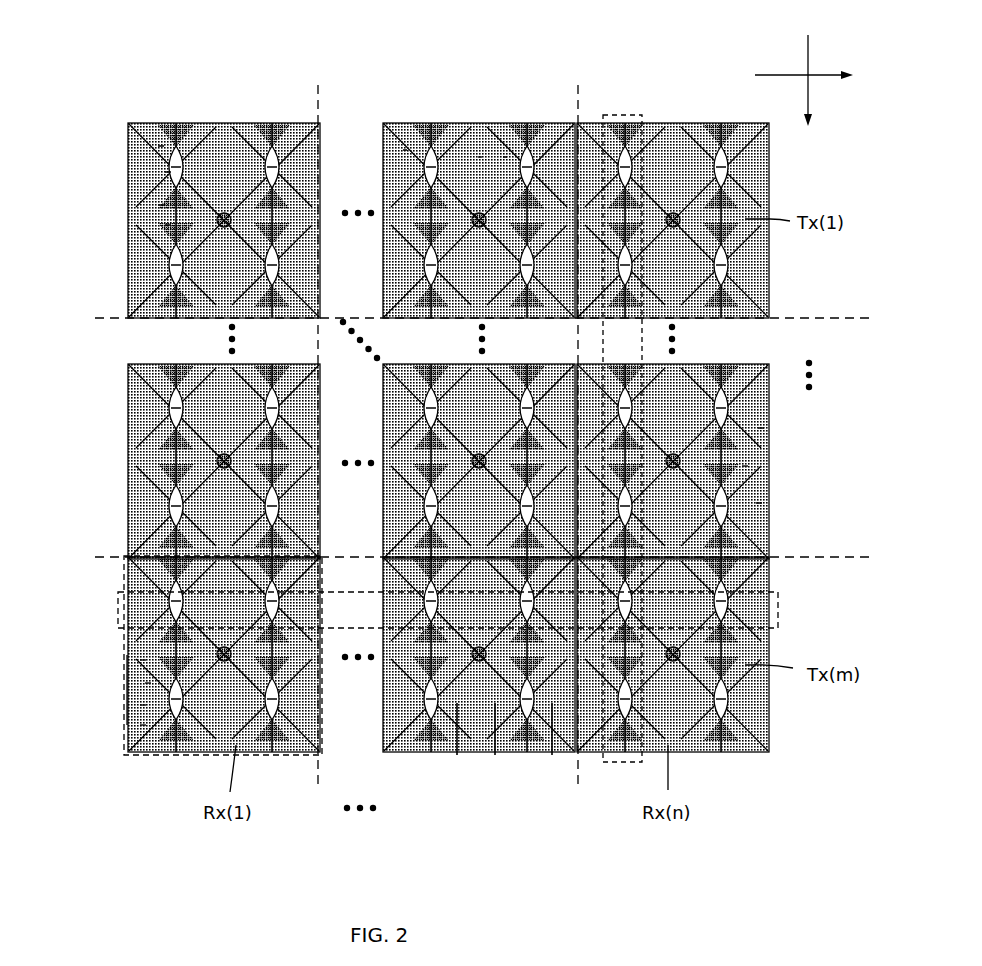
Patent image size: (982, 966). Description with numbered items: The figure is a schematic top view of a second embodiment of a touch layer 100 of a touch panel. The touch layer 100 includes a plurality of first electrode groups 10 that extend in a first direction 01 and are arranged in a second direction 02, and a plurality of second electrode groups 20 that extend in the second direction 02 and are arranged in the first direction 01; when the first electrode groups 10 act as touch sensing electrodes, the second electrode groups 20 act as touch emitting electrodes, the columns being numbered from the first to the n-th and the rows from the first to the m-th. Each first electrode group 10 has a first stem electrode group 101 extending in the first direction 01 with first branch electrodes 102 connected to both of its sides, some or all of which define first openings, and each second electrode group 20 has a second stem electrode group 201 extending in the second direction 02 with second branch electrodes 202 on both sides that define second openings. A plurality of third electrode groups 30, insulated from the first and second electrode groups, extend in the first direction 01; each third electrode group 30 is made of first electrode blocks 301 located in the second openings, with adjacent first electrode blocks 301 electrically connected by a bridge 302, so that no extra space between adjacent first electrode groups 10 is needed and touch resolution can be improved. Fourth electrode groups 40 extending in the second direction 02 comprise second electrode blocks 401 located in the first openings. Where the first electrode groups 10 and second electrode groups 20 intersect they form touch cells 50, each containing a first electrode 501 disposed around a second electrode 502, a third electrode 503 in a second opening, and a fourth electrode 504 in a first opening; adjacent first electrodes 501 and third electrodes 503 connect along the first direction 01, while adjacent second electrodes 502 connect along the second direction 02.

The touch layer 100 is at (485, 417).
The first electrode group 10 is at (532, 58).
The first stem electrode group 101 is at (480, 157).
The first branch electrode 102 is at (405, 150).
The second electrode group 20 is at (830, 427).
The second stem electrode group 201 is at (745, 466).
The second branch electrode 202 is at (762, 428).
The third electrode group 30 is at (615, 114).
The first electrode block 301 is at (158, 146).
The bridge 302 is at (165, 172).
The fourth electrode group 40 is at (116, 612).
The second electrode block 401 is at (552, 755).
The touch cell 50 is at (75, 655).
The first electrode 501 is at (140, 725).
The second electrode 502 is at (140, 660).
The third electrode 503 is at (145, 683).
The fourth electrode 504 is at (140, 705).
The first direction 01 is at (817, 69).
The second direction 02 is at (788, 75).